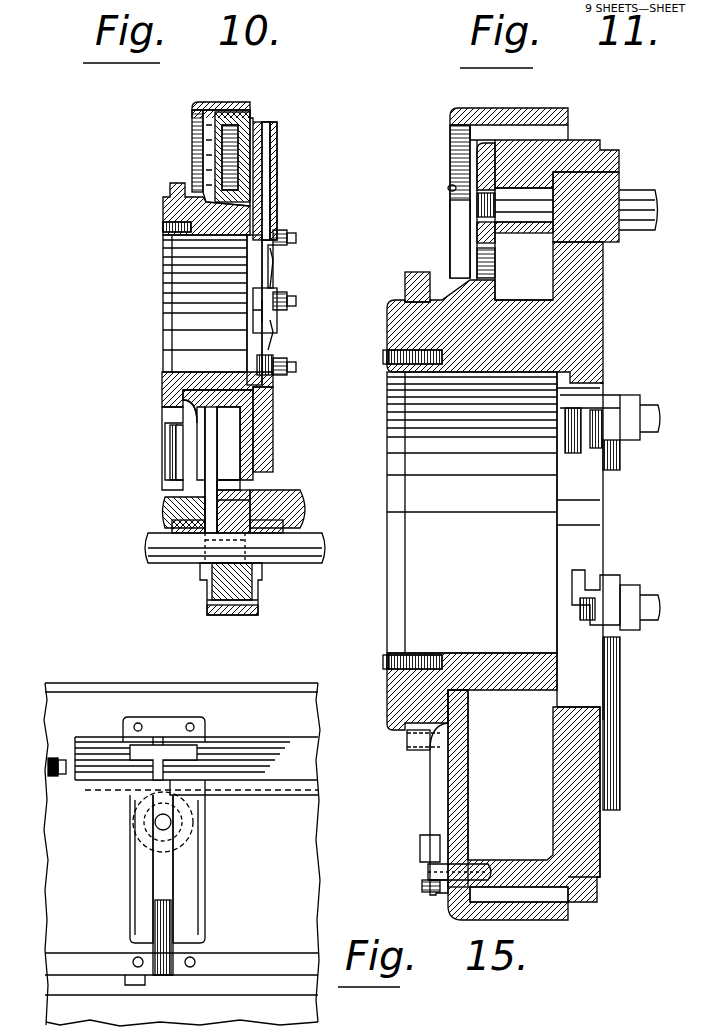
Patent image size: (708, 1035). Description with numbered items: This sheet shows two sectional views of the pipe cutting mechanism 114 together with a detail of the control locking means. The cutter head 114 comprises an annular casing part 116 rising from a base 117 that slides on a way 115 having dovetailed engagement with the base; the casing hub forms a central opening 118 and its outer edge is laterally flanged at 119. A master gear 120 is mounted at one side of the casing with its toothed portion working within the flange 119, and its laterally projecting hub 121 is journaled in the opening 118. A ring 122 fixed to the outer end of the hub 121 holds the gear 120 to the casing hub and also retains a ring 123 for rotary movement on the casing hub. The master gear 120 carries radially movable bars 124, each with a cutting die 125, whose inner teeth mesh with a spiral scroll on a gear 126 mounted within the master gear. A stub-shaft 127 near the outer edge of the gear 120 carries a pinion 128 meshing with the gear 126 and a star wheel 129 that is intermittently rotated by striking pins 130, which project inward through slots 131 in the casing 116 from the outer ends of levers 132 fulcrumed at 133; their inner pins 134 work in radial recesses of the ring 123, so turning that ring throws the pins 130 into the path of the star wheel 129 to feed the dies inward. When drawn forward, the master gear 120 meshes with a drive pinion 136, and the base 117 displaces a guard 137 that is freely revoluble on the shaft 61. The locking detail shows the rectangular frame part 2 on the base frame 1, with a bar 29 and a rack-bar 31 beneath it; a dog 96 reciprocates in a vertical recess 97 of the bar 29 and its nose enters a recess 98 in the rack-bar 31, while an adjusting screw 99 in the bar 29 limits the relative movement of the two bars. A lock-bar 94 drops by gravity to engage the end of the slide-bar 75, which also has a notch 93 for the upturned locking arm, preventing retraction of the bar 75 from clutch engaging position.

In FIG. 10, the pipe cutting mechanism 114 is at (192, 118).
In FIG. 11, the pipe cutting mechanism 114 is at (450, 118).
In FIG. 10, the laterally flanged outer edge 119 is at (230, 113).
In FIG. 11, the laterally flanged outer edge 119 is at (524, 112).
In FIG. 10, the master gear 120 is at (258, 130).
In FIG. 11, the master gear 120 is at (598, 856).
In FIG. 10, the annular casing part 116 is at (205, 192).
In FIG. 11, the annular casing part 116 is at (455, 800).
In FIG. 10, the bars 124 is at (272, 215).
In FIG. 11, the bars 124 is at (578, 572).
In FIG. 10, the ring 122 is at (168, 228).
In FIG. 11, the ring 122 is at (390, 336).
In FIG. 10, the central opening 118 is at (200, 238).
In FIG. 11, the central opening 118 is at (466, 655).
In FIG. 10, the cutting die 125 is at (274, 300).
In FIG. 11, the cutting die 125 is at (615, 467).
In FIG. 10, the hub 121 is at (206, 375).
In FIG. 11, the hub 121 is at (515, 385).
In FIG. 10, the ring 123 is at (168, 422).
In FIG. 11, the ring 123 is at (418, 280).
In FIG. 10, the pinion 128 is at (218, 461).
In FIG. 11, the pinion 128 is at (602, 200).
In FIG. 10, the base 117 is at (272, 510).
In FIG. 10, the way 115 is at (166, 523).
In FIG. 10, the shaft 61 is at (150, 562).
In FIG. 10, the drive pinion 136 is at (222, 586).
In FIG. 10, the guard 137 is at (262, 600).
In FIG. 11, the star wheel 129 is at (478, 172).
In FIG. 11, the stub-shaft 127 is at (524, 210).
In FIG. 11, the gear 126 is at (565, 250).
In FIG. 11, the laterally projecting pins 134 is at (405, 742).
In FIG. 11, the levers 132 is at (428, 778).
In FIG. 11, the pins 130 is at (478, 864).
In FIG. 11, the fulcrum 133 is at (422, 865).
In FIG. 11, the slots 131 is at (450, 890).
In FIG. 15, the dog 96 is at (150, 772).
In FIG. 15, the vertical recess 97 is at (160, 742).
In FIG. 15, the bar 29 is at (246, 748).
In FIG. 15, the adjusting screw 99 is at (80, 766).
In FIG. 15, the recess 98 is at (150, 788).
In FIG. 15, the rack-bar 31 is at (290, 798).
In FIG. 15, the frame part 2 is at (182, 854).
In FIG. 15, the lock-bar 94 is at (165, 884).
In FIG. 15, the slide-bar 75 is at (70, 975).
In FIG. 15, the notch 93 is at (134, 978).
In FIG. 15, the base frame 1 is at (181, 1010).